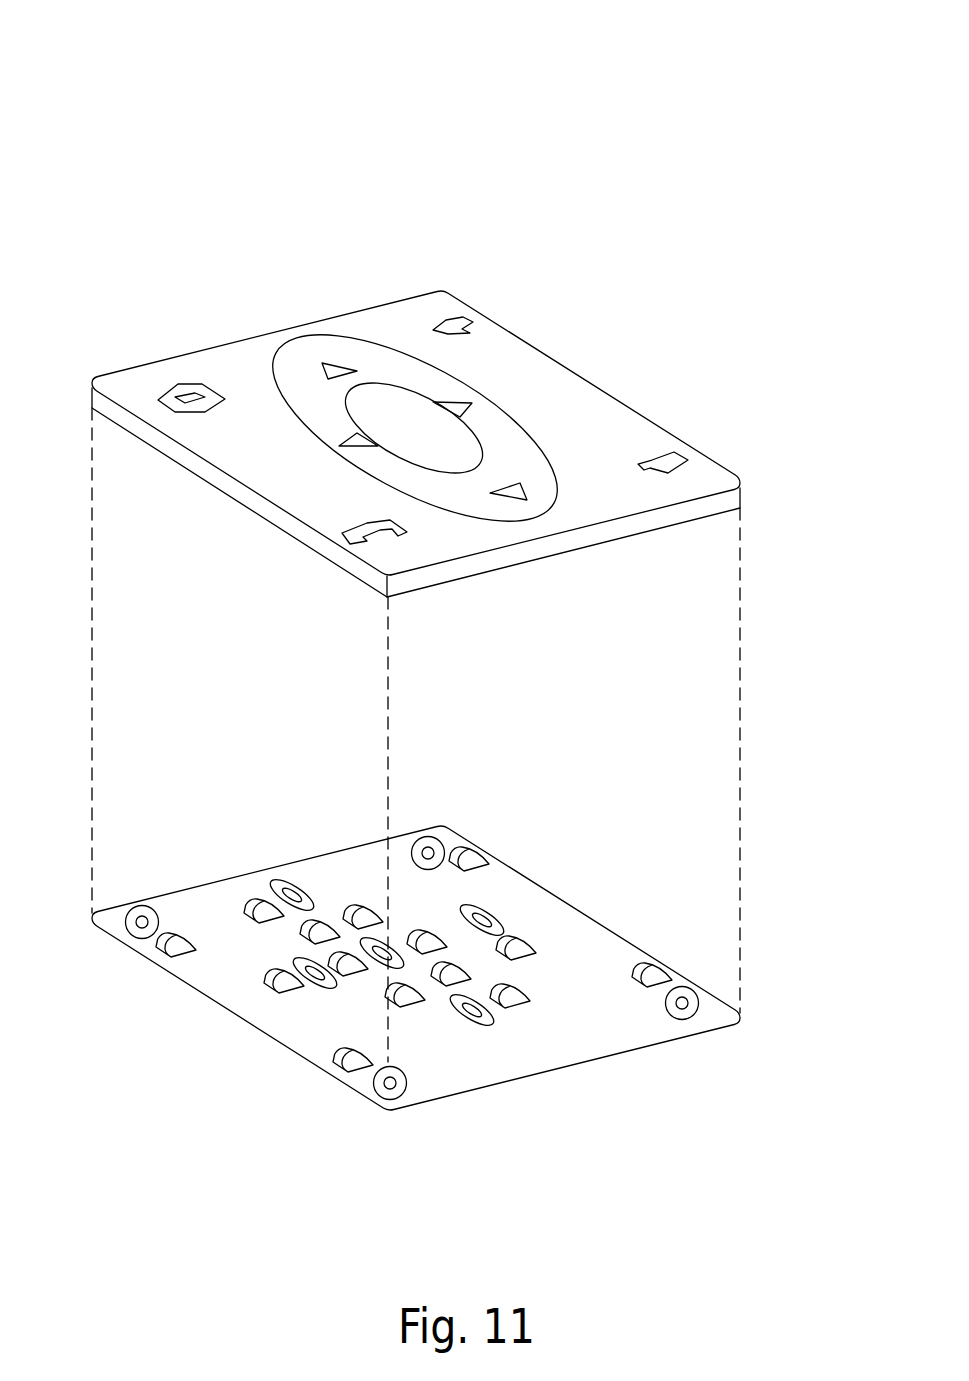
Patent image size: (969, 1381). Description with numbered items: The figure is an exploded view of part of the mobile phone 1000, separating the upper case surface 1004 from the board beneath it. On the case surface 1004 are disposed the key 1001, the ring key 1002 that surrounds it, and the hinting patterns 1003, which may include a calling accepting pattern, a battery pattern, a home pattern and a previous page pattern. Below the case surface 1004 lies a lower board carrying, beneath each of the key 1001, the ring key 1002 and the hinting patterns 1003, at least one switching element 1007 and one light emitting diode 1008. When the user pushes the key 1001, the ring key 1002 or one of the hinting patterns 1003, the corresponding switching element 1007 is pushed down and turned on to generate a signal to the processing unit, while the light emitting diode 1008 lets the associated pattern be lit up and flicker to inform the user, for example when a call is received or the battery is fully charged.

The mobile phone 1000 is at (692, 108).
The key 1001 is at (412, 430).
The ring key 1002 is at (310, 348).
The hinting patterns 1003 is at (168, 390).
The case surface 1004 is at (637, 427).
The switching element 1007 is at (398, 1101).
The light emitting diode 1008 is at (350, 1077).